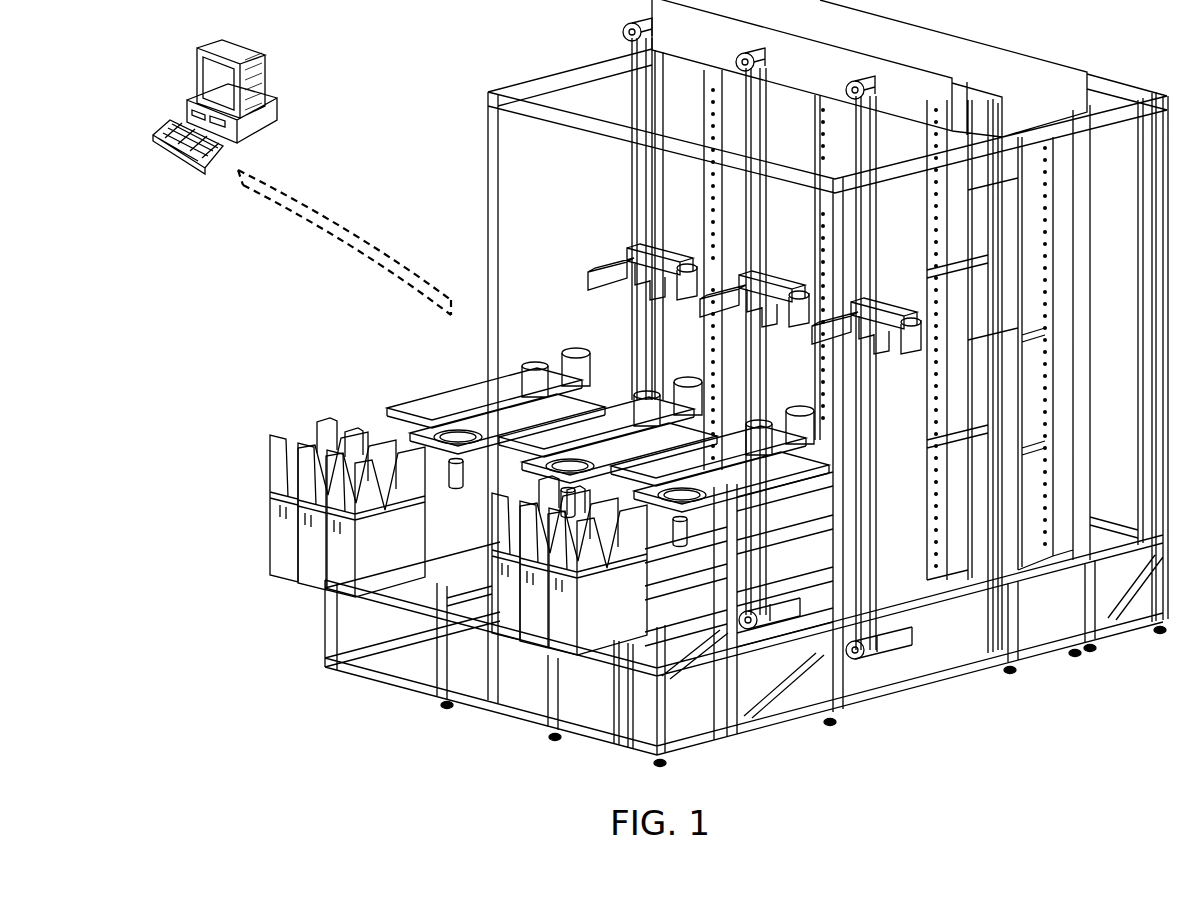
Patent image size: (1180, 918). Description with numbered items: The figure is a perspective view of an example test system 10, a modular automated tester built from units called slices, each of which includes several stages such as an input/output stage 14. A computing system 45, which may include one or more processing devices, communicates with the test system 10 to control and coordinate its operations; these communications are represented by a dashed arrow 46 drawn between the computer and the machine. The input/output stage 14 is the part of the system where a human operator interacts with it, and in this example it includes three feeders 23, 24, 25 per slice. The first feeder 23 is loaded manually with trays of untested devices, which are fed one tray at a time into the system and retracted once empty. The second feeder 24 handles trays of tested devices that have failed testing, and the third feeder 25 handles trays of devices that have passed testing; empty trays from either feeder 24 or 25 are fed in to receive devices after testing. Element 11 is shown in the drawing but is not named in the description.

The test system 10 is at (695, 383).
The transfer table 11 is at (418, 388).
The input/output (I/O) stage 14 is at (323, 520).
The first feeder 23 is at (278, 580).
The second feeder 24 is at (316, 588).
The third feeder 25 is at (348, 597).
The computing system 45 is at (198, 83).
The dashed arrow 46 is at (282, 207).